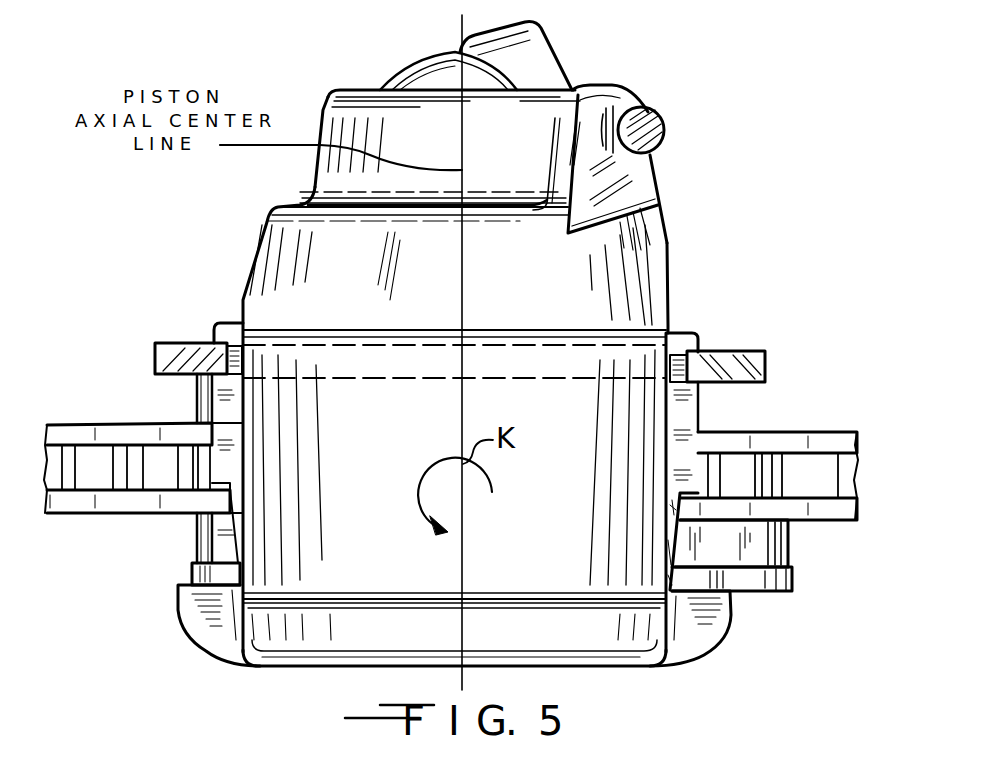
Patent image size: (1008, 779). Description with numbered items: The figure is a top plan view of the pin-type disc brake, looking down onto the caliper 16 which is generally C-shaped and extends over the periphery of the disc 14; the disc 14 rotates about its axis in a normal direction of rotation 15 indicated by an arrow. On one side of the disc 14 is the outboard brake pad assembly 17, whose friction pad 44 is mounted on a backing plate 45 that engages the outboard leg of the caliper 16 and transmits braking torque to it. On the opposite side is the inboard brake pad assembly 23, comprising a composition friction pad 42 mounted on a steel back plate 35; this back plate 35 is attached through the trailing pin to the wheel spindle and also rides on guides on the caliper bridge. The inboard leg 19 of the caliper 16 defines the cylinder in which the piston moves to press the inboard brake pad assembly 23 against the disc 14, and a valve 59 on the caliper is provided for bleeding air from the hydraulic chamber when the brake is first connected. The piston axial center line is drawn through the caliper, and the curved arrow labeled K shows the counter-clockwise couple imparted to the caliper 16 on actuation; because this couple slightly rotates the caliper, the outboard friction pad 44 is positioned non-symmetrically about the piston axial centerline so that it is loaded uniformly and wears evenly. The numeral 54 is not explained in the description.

The disc 14 is at (838, 431).
The normal direction of rotation 15 is at (128, 398).
The caliper 16 is at (385, 567).
The outboard brake pad assembly 17 is at (795, 585).
The inboard leg 19 is at (340, 90).
The inboard brake pad assembly 23 is at (767, 365).
The back plate 35 is at (720, 350).
The friction pad 42 is at (714, 398).
The friction pad 44 is at (200, 527).
The backing plate 45 is at (192, 572).
The collar 54 is at (790, 540).
The valve 59 is at (665, 120).